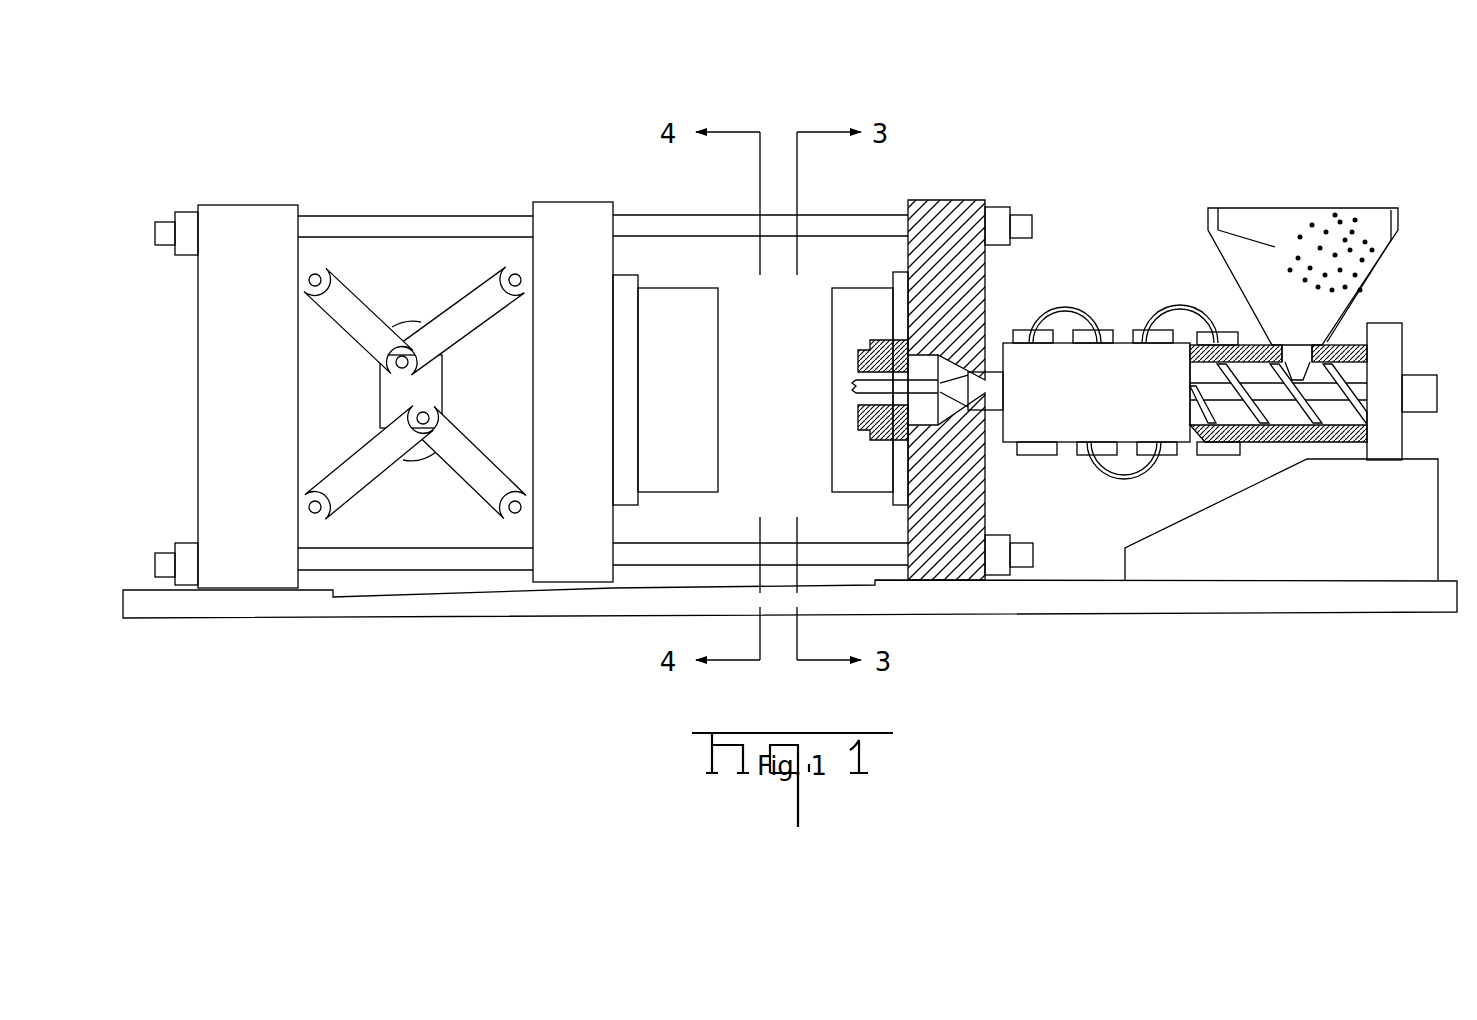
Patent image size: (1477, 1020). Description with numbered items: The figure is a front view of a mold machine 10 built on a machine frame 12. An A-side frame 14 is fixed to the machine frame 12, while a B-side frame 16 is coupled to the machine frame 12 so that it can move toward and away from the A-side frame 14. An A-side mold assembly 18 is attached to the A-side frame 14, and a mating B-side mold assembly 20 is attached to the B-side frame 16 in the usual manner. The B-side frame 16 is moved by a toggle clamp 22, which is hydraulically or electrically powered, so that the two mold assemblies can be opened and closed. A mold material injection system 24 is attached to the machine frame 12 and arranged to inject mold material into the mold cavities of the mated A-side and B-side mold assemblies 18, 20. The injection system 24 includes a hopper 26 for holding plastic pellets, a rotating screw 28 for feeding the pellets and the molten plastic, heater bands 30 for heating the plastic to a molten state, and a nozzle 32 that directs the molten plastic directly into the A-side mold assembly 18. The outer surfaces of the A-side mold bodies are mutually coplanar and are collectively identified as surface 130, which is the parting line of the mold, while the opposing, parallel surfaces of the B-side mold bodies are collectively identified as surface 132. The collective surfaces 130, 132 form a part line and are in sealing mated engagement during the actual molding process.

The mold machine 10 is at (1100, 176).
The machine frame 12 is at (1110, 597).
The A-side frame 14 is at (945, 208).
The B-side frame 16 is at (560, 202).
The A-side mold assembly 18 is at (850, 286).
The B-side mold assembly 20 is at (670, 286).
The toggle clamp 22 is at (410, 322).
The mold material injection system 24 is at (1403, 322).
The hopper 26 is at (1290, 206).
The rotating screw 28 is at (1345, 377).
The heater bands 30 is at (1142, 332).
The nozzle 32 is at (955, 395).
The collective surface of A-side mold bodies 130 is at (830, 416).
The collective surface of B-side mold bodies 132 is at (720, 408).